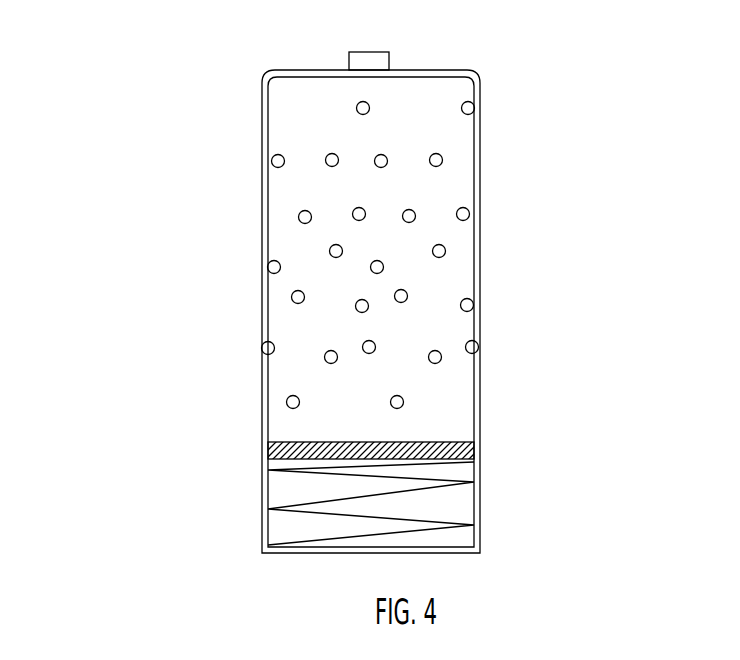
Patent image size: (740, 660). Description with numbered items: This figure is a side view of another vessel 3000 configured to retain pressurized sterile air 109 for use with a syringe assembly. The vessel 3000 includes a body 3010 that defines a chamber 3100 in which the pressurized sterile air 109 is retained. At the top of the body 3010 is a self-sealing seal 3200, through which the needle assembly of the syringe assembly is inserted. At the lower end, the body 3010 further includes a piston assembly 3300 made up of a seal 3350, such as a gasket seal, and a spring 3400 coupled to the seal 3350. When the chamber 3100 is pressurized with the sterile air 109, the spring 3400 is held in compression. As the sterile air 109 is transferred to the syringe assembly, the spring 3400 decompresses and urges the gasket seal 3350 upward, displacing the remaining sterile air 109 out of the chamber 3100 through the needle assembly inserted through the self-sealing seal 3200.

The vessel 3000 is at (178, 354).
The chamber 3100 is at (470, 173).
The body 3010 is at (477, 395).
The self-sealing seal 3200 is at (379, 66).
The pressurized sterile air 109 is at (450, 263).
The piston assembly 3300 is at (616, 415).
The seal 3350 is at (472, 449).
The spring 3400 is at (466, 482).